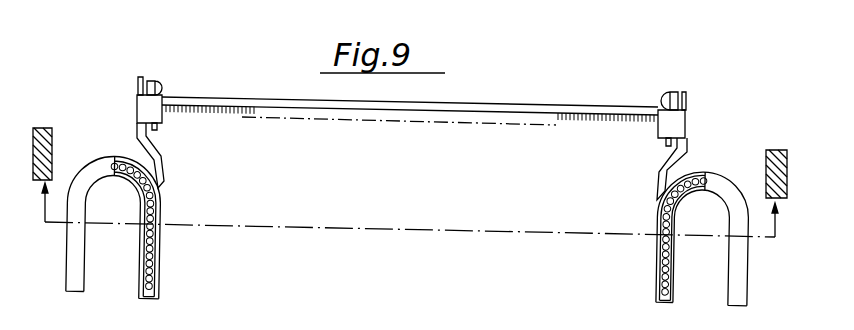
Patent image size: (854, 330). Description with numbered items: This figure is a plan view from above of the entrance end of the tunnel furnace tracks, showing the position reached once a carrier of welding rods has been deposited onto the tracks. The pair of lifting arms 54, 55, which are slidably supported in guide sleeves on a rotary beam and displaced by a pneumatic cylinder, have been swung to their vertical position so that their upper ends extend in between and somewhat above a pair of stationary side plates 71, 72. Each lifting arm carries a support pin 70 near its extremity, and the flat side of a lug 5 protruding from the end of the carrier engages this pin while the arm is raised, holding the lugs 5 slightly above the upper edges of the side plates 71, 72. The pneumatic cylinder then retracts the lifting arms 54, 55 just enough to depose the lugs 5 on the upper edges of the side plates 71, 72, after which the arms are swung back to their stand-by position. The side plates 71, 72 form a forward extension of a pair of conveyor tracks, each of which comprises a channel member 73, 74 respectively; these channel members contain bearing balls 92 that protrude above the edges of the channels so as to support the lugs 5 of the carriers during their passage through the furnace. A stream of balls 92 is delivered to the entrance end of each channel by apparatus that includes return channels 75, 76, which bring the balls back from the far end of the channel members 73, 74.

The lug 5 is at (143, 116).
The lifting arm 54 is at (664, 96).
The lifting arm 55 is at (160, 86).
The support pin 70 is at (158, 128).
The stationary side plate 71 is at (688, 94).
The stationary side plate 72 is at (138, 89).
The channel member 73 is at (657, 260).
The channel member 74 is at (160, 250).
The return channel 75 is at (737, 262).
The return channel 76 is at (83, 257).
The bearing ball 92 is at (150, 284).